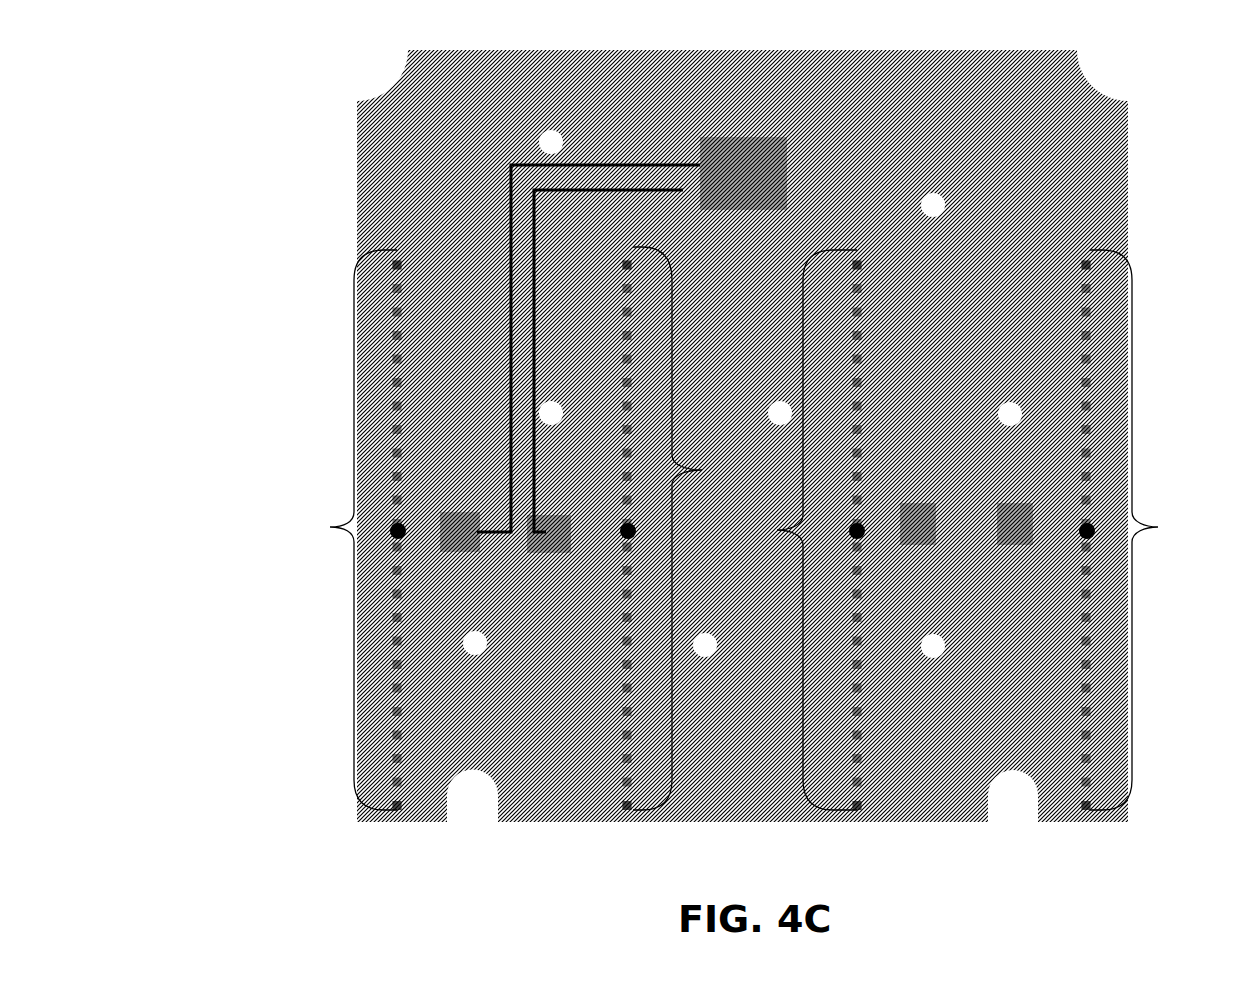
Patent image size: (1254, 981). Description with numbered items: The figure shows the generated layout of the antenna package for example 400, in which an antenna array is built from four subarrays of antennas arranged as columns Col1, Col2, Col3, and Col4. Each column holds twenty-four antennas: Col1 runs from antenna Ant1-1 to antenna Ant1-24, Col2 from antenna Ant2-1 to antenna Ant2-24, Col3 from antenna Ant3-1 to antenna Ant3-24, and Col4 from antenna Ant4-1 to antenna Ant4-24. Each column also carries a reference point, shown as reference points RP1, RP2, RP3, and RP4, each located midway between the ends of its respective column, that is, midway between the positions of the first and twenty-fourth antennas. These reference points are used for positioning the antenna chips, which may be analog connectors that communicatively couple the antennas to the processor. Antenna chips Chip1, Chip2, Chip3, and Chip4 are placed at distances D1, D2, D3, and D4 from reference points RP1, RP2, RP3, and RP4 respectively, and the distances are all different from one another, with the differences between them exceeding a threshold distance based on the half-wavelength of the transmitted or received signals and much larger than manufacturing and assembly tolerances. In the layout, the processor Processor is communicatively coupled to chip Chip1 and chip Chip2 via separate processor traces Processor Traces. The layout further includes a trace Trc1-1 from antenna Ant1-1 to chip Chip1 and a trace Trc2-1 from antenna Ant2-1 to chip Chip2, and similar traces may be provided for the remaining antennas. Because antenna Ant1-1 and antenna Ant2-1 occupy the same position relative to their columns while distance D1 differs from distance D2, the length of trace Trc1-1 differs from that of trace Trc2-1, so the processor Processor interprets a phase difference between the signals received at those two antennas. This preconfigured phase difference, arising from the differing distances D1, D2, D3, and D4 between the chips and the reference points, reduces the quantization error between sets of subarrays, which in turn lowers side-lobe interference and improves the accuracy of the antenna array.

The example 400 is at (250, 42).
The processor Processor is at (783, 188).
The processor traces Processor Traces is at (668, 188).
The first subarray of antennas Col1 is at (383, 528).
The second subarray of antennas Col2 is at (614, 534).
The third subarray of antennas Col3 is at (835, 530).
The fourth subarray of antennas Col4 is at (1095, 529).
The antenna Ant1-1 is at (397, 262).
The antenna Ant1-24 is at (399, 810).
The antenna Ant2-1 is at (624, 285).
The antenna Ant2-24 is at (630, 810).
The antenna Ant3-1 is at (857, 262).
The antenna Ant3-24 is at (857, 810).
The antenna Ant4-1 is at (1088, 262).
The antenna Ant4-24 is at (1090, 810).
The trace Trc1-1 is at (463, 508).
The trace Trc2-1 is at (566, 515).
The antenna chip Chip1 is at (464, 508).
The antenna chip Chip2 is at (553, 530).
The antenna chip Chip3 is at (907, 507).
The antenna chip Chip4 is at (1027, 540).
The reference point RP1 is at (405, 536).
The reference point RP2 is at (620, 536).
The reference point RP3 is at (864, 536).
The reference point RP4 is at (1078, 527).
The distance D1 is at (437, 505).
The distance D2 is at (620, 507).
The distance D3 is at (902, 507).
The distance D4 is at (1083, 550).